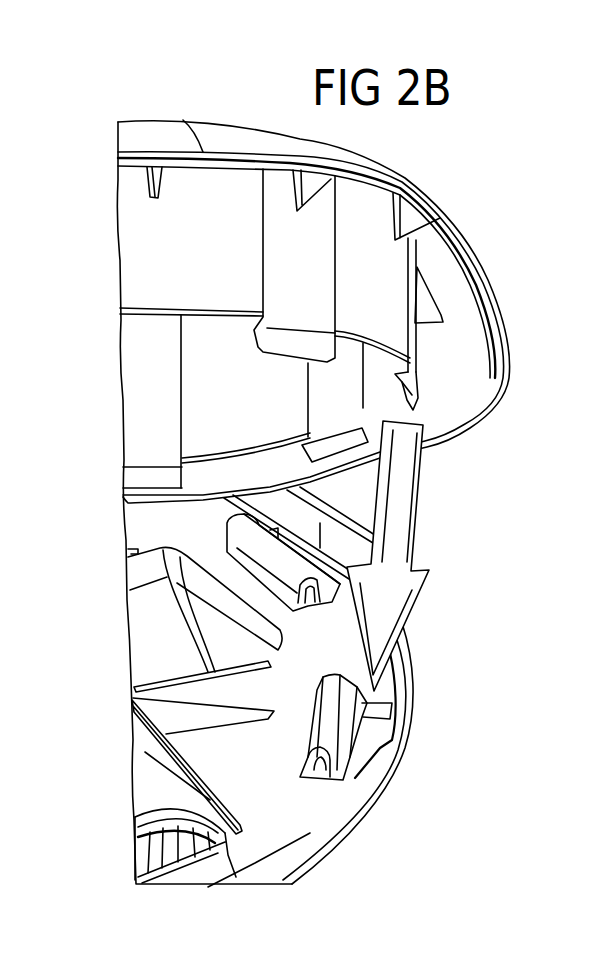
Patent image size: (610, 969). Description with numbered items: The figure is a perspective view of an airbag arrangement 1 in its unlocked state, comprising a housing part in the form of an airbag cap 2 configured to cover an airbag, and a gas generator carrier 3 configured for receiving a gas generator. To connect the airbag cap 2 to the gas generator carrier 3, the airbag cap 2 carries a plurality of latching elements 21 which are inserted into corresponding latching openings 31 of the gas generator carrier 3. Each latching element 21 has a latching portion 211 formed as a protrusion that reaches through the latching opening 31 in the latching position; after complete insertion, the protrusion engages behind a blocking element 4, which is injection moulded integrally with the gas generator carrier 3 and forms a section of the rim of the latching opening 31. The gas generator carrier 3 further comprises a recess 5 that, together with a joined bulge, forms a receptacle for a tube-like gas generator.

The airbag arrangement 1 is at (523, 220).
The airbag cap 2 is at (497, 285).
The latching elements 21 is at (287, 343).
The latching portion 211 is at (410, 370).
The gas generator carrier 3 is at (350, 825).
The latching openings 31 is at (368, 743).
The blocking element 4 is at (243, 537).
The recess 5 is at (257, 626).